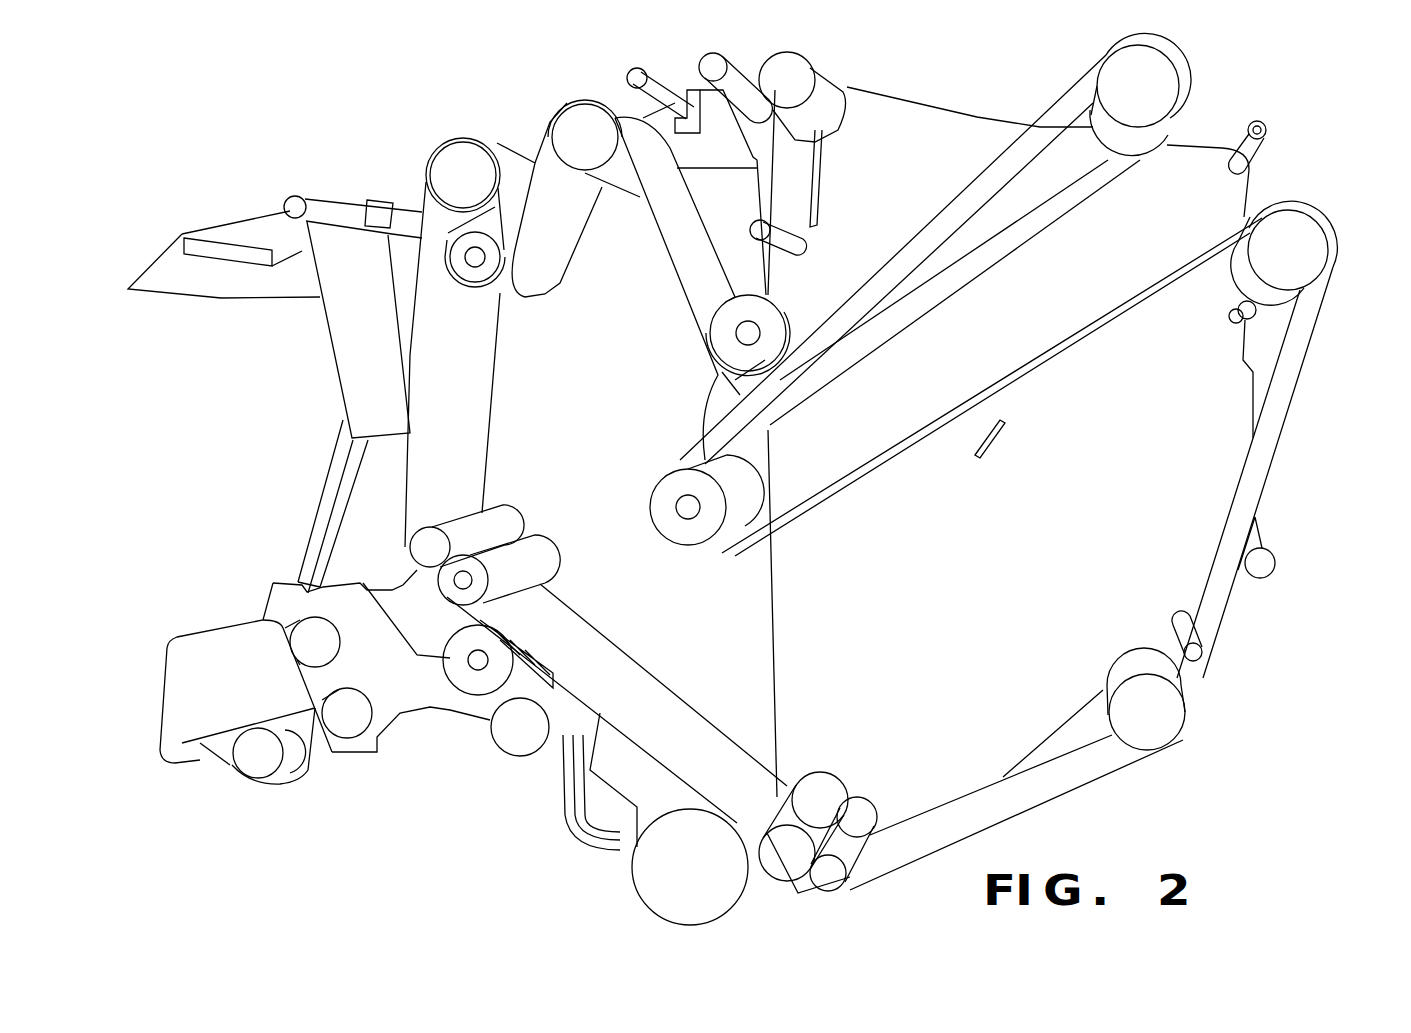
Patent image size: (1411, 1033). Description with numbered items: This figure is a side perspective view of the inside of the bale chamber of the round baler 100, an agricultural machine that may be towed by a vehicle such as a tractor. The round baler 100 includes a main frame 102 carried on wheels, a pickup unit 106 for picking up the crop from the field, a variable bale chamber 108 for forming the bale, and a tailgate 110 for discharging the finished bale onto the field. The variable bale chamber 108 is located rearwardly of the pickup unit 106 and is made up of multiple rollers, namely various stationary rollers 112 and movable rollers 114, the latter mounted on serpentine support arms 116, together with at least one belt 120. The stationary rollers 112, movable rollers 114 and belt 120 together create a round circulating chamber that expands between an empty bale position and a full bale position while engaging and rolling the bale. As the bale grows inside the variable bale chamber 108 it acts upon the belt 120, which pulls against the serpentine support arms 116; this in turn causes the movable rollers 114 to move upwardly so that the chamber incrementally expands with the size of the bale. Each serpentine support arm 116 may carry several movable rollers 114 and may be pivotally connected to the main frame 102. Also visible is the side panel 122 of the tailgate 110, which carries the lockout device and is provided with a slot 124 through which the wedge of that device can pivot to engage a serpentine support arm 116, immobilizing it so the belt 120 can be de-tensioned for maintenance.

The round baler 100 is at (262, 172).
The main frame 102 is at (378, 205).
The pickup unit 106 is at (235, 790).
The variable bale chamber 108 is at (912, 602).
The tailgate 110 is at (1270, 165).
The stationary rollers 112 is at (455, 133).
The movable rollers 114 is at (708, 350).
The serpentine support arms 116 is at (700, 415).
The belt 120 is at (1105, 313).
The side panel 122 is at (1252, 205).
The slot 124 is at (1000, 437).